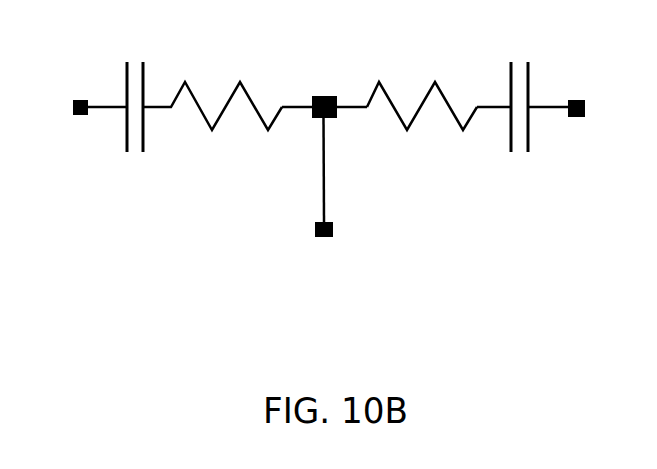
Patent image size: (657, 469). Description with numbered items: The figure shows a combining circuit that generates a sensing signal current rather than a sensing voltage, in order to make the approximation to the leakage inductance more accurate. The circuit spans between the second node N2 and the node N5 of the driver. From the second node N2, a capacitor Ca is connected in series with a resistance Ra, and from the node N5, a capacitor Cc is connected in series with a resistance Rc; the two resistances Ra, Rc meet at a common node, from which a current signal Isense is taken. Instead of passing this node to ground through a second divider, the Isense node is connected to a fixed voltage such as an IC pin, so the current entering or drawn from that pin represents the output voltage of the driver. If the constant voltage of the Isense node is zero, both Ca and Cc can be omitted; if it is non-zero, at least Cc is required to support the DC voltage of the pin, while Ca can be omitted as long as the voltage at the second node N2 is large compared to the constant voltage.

The capacitor Ca is at (137, 86).
The capacitor Cc is at (515, 90).
The resistance Ra is at (219, 86).
The resistance Rc is at (422, 85).
The second node N2 is at (57, 105).
The node N5 is at (597, 104).
The current signal Isense is at (323, 281).